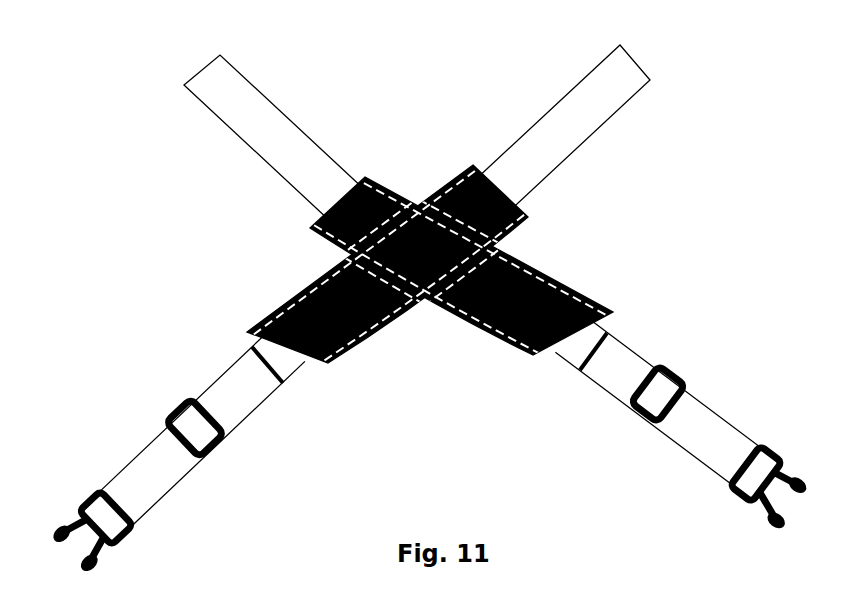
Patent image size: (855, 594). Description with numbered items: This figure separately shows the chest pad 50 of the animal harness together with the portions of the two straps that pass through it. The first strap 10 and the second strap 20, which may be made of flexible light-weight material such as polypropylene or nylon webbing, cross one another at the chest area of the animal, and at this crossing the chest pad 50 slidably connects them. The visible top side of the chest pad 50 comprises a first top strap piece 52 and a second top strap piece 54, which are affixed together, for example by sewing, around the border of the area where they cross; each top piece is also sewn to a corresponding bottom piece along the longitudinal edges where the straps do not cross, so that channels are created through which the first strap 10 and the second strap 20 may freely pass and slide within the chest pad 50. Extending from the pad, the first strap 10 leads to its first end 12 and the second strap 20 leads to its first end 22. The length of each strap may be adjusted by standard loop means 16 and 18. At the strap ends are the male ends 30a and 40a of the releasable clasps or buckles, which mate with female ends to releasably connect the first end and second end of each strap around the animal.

The first strap 10 is at (248, 97).
The second strap 20 is at (603, 72).
The first end 12 is at (727, 430).
The first end 22 is at (137, 457).
The loop means 16 is at (673, 370).
The loop means 18 is at (180, 403).
The male end 30a is at (787, 467).
The male end 40a is at (72, 517).
The chest pad 50 is at (428, 347).
The first top strap piece 52 is at (380, 183).
The second top strap piece 54 is at (463, 170).